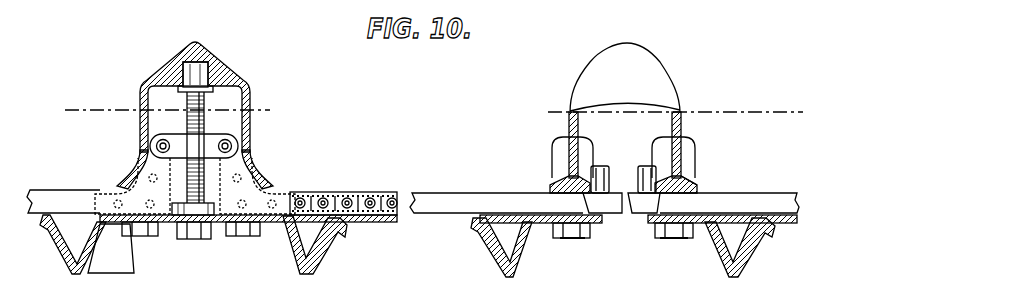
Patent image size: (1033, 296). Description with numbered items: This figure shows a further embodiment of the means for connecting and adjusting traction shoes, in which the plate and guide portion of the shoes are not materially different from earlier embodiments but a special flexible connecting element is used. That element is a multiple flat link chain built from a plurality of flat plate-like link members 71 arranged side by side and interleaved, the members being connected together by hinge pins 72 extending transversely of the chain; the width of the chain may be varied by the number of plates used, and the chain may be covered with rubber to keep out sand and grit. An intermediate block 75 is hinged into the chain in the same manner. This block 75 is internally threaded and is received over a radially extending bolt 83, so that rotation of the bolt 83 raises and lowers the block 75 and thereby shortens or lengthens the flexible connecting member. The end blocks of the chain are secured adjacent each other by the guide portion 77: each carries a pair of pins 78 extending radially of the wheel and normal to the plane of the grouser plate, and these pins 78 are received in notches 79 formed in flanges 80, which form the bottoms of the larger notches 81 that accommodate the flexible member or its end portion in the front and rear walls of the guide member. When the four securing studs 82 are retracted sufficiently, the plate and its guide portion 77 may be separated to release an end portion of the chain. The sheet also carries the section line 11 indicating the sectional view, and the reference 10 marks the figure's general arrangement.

The support bar 10 is at (428, 193).
The section line 11- 11 is at (65, 98).
The flat plate-like link members 71 is at (312, 194).
The hinge pins 72 is at (336, 194).
The intermediate block 75 is at (214, 132).
The guide portion 77 is at (592, 72).
The pins 78 is at (641, 188).
The notches 79 is at (698, 182).
The flanges 80 is at (592, 224).
The larger notches 81 is at (551, 183).
The securing studs 82 is at (568, 239).
The radially extending bolt 83 is at (141, 100).